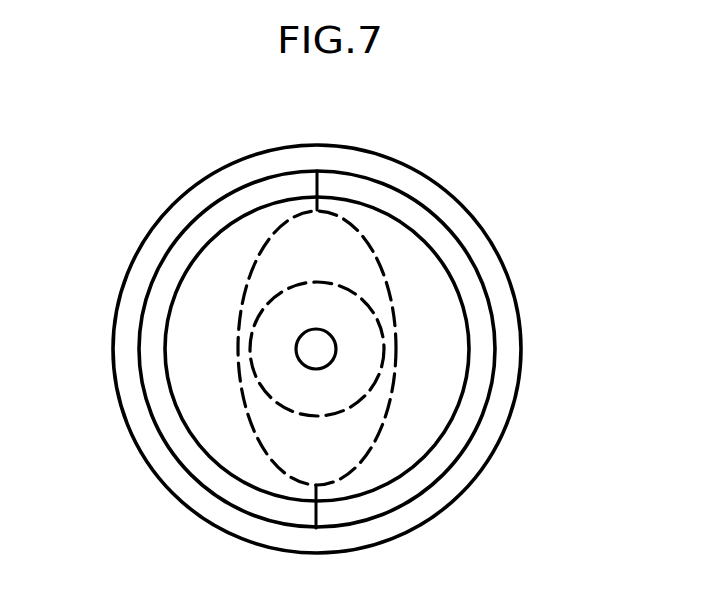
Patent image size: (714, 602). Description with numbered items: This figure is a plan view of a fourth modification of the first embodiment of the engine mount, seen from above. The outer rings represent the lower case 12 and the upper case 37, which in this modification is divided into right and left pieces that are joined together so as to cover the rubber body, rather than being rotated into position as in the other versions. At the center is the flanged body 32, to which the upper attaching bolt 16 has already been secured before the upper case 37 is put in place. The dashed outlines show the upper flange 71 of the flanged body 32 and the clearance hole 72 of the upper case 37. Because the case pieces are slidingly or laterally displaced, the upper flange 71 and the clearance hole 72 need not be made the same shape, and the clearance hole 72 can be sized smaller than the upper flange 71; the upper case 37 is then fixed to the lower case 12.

The lower case 12 is at (385, 161).
The upper case 37 is at (203, 220).
The upper flange 71 is at (458, 350).
The clearance hole 72 is at (397, 295).
The flanged body 32 is at (245, 400).
The upper attaching bolt 16 is at (327, 356).